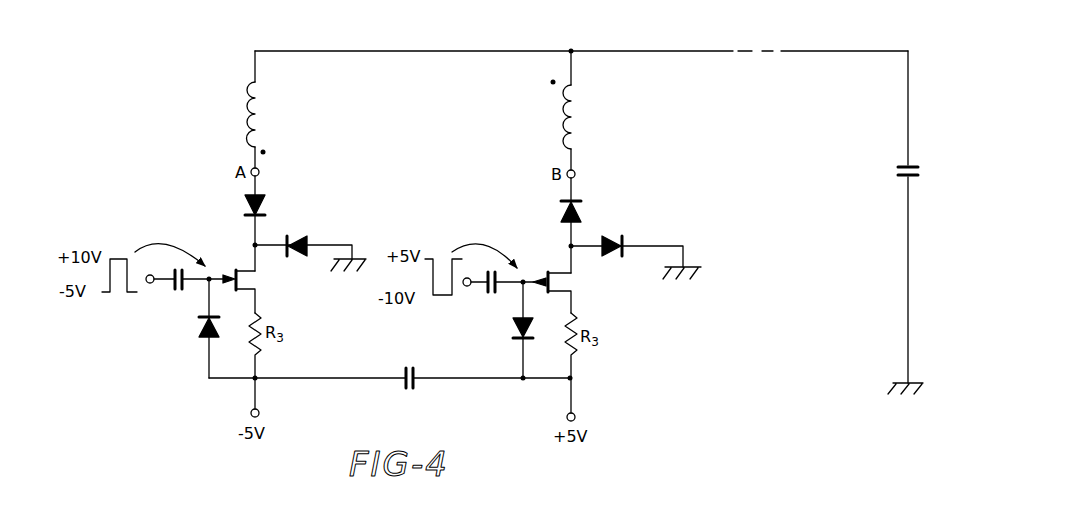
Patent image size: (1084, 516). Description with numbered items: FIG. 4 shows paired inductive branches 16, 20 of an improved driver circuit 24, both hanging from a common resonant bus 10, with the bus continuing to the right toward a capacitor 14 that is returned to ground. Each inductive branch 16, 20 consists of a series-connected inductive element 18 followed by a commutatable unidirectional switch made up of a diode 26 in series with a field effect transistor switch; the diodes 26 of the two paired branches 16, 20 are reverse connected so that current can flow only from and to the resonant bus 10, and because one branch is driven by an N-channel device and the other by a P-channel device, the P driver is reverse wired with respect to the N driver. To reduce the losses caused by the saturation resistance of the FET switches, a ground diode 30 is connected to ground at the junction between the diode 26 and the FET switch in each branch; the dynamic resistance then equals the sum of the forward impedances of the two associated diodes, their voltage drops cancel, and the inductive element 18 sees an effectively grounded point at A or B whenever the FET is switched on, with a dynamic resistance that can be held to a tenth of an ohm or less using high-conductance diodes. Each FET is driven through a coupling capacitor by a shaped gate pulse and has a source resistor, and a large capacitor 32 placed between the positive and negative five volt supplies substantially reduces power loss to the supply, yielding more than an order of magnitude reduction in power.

The resonant bus 10 is at (422, 52).
The capacitor 14 is at (918, 178).
The inductive branch 16 is at (562, 66).
The inductive element 18 is at (239, 96).
The inductive branch 20 is at (264, 89).
The driver circuit 24 is at (774, 42).
The diode 26 is at (248, 217).
The ground diode 30 is at (308, 239).
The capacitor 32 is at (414, 372).